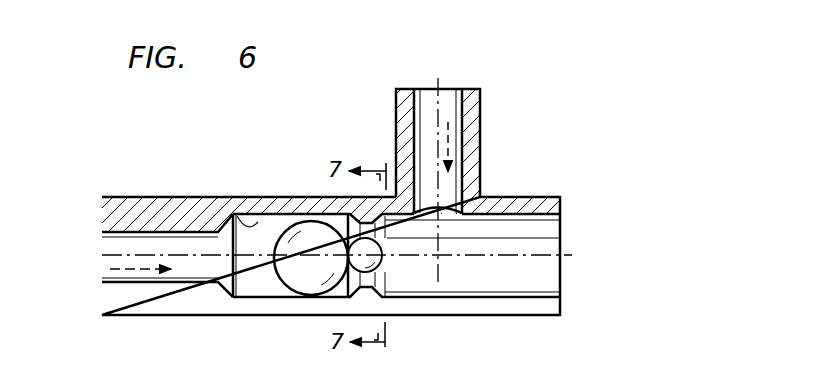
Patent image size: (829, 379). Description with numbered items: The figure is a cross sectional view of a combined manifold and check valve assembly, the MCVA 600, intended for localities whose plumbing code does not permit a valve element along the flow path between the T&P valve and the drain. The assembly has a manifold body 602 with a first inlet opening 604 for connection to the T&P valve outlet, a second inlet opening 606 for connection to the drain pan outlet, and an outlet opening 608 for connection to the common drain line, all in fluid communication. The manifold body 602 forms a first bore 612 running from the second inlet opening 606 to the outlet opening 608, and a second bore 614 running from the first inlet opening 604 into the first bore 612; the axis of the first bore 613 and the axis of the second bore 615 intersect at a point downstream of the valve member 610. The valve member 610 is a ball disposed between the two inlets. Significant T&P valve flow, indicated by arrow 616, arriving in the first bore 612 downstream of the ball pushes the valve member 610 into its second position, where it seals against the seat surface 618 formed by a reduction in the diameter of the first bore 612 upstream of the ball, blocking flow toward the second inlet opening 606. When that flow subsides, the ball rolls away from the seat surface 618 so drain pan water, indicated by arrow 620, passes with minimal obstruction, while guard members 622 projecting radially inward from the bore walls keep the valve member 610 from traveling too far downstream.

The manifold and check valve assembly 600 is at (160, 150).
The manifold body 602 is at (140, 317).
The first inlet opening 604 is at (421, 76).
The second inlet opening 606 is at (88, 240).
The outlet opening 608 is at (570, 276).
The valve member 610 is at (282, 295).
The first bore 612 is at (553, 222).
The axis of the first bore 613 is at (458, 253).
The second bore 614 is at (448, 90).
The axis of the second bore 615 is at (438, 270).
The arrow indicating T&P valve flow 616 is at (447, 140).
The seat surface 618 is at (255, 207).
The arrow indicating drain pan flow 620 is at (112, 269).
The guard members 622 is at (378, 290).